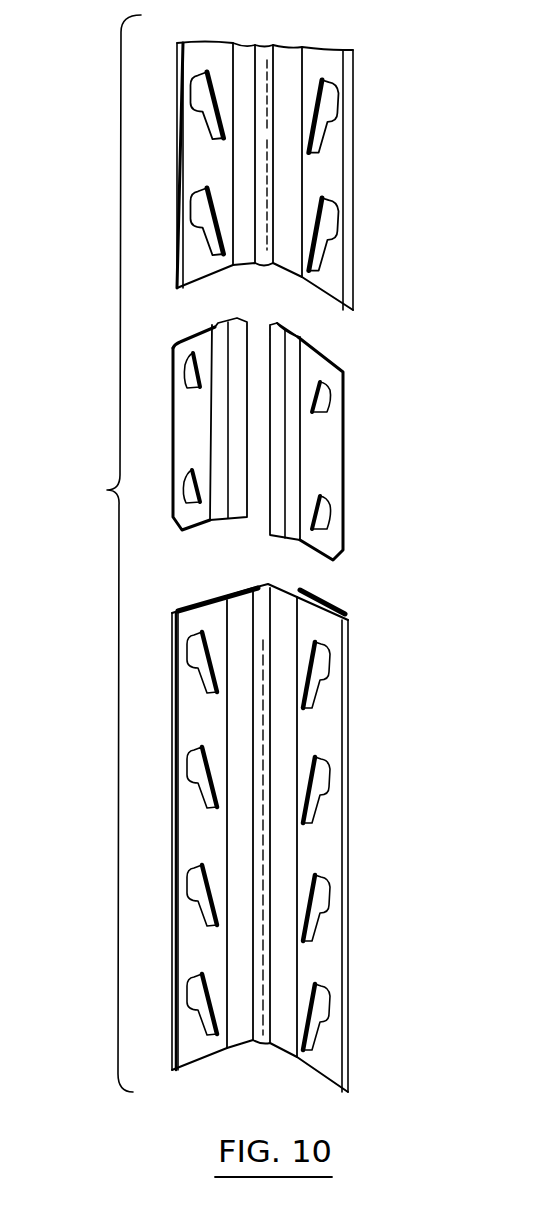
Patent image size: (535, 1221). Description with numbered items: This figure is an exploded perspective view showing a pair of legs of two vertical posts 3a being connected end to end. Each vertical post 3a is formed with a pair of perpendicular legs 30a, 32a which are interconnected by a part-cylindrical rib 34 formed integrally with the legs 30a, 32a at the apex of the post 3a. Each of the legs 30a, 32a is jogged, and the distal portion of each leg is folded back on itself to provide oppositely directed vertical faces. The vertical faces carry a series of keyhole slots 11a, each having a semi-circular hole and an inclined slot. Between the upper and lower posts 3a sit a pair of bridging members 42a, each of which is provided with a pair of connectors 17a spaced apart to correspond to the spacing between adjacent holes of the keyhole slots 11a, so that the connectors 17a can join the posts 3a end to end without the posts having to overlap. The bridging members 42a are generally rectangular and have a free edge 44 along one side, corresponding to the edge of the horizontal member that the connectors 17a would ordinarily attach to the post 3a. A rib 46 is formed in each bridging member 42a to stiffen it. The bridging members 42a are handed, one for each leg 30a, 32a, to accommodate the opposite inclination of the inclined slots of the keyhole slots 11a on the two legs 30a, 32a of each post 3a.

The vertical post 3a is at (353, 239).
The leg 30a is at (197, 152).
The leg 32a is at (328, 162).
The part-cylindrical rib 34 is at (262, 612).
The keyhole slots 11a is at (312, 703).
The bridging member 42a is at (327, 457).
The free edge 44 is at (270, 353).
The rib 46 is at (292, 517).
The connector 17a is at (313, 407).